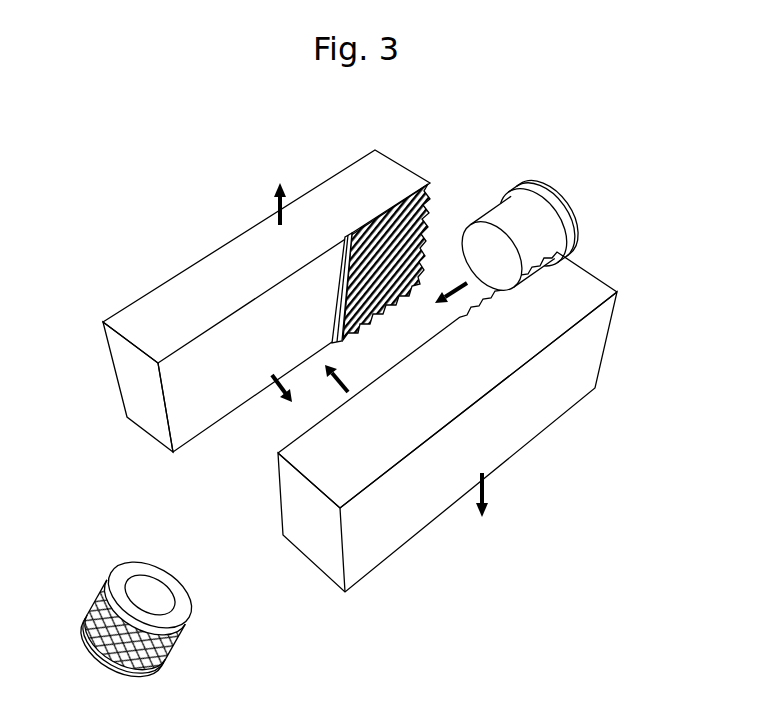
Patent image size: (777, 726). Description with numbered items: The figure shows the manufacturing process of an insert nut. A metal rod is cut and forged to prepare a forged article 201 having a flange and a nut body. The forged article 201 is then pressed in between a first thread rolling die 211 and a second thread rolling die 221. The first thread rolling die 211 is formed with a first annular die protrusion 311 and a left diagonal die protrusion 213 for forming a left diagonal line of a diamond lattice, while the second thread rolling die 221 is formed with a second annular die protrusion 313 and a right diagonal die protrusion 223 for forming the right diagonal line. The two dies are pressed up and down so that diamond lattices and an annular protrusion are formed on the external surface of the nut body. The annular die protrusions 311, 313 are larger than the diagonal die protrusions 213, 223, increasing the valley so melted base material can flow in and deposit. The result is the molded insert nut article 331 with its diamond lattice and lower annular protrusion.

The forged article 201 is at (547, 208).
The first thread rolling die 211 is at (145, 415).
The left diagonal die protrusion 213 is at (388, 208).
The second thread rolling die 221 is at (489, 432).
The right diagonal die protrusion 223 is at (497, 291).
The first annular die protrusion 311 is at (367, 223).
The second annular die protrusion 313 is at (467, 318).
The molded insert nut article 331 is at (131, 606).